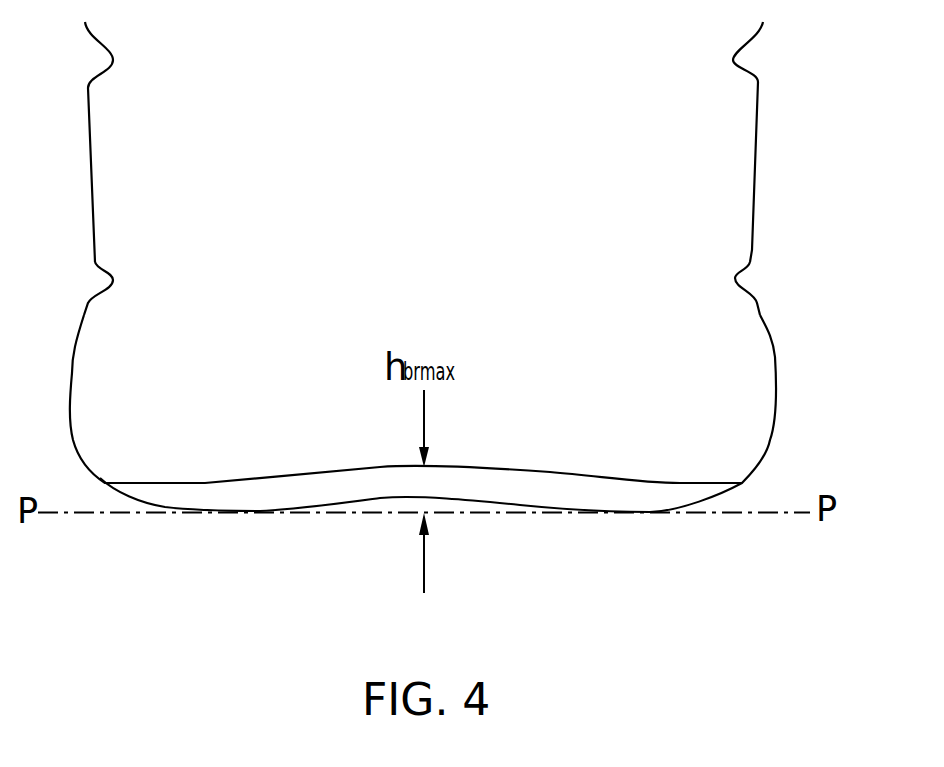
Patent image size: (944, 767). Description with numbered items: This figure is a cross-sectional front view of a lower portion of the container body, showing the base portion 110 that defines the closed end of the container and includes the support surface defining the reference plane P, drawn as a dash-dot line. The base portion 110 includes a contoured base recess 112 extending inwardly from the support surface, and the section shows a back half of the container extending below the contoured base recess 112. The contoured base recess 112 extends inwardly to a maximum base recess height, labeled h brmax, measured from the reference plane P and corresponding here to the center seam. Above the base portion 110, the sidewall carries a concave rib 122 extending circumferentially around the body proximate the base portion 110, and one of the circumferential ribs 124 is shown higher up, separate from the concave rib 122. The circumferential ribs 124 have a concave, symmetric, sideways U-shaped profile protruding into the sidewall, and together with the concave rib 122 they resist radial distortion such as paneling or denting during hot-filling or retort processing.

The base portion 110 is at (762, 475).
The contoured base recess 112 is at (673, 483).
The concave rib 122 is at (745, 280).
The circumferential ribs 124 is at (743, 60).